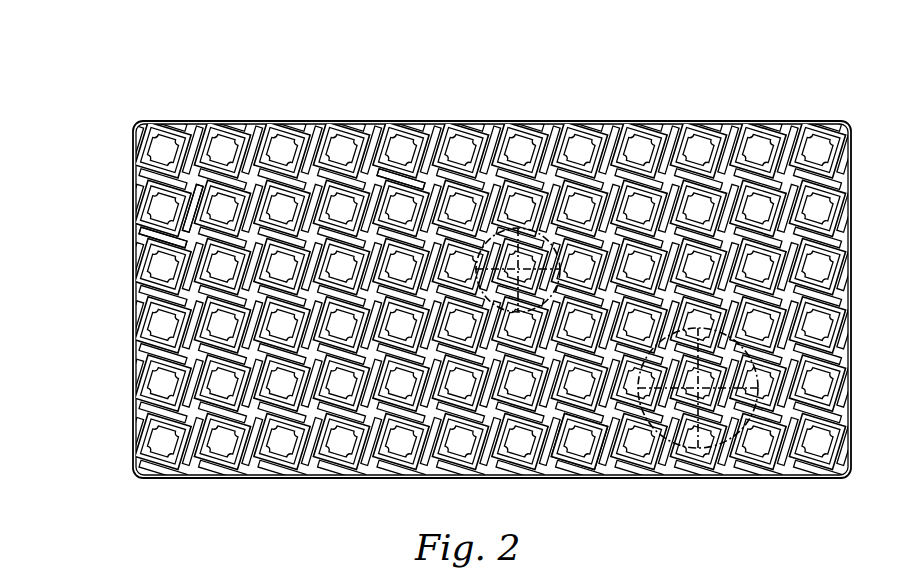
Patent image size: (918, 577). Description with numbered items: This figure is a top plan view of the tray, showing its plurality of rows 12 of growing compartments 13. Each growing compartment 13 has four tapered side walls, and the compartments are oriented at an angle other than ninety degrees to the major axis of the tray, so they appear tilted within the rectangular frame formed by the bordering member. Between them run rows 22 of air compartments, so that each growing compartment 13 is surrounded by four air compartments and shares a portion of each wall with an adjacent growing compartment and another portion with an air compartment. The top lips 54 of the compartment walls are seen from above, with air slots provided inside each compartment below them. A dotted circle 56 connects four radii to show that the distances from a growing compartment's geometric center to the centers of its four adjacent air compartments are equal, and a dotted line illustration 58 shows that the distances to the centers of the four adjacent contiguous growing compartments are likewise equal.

The rows of growing compartments 12 is at (130, 283).
The growing compartment 13 is at (577, 447).
The rows of air compartments 22 is at (197, 241).
The top lips 54 is at (400, 182).
The circle connecting four radii 56 is at (522, 212).
The dotted line illustration 58 is at (693, 325).